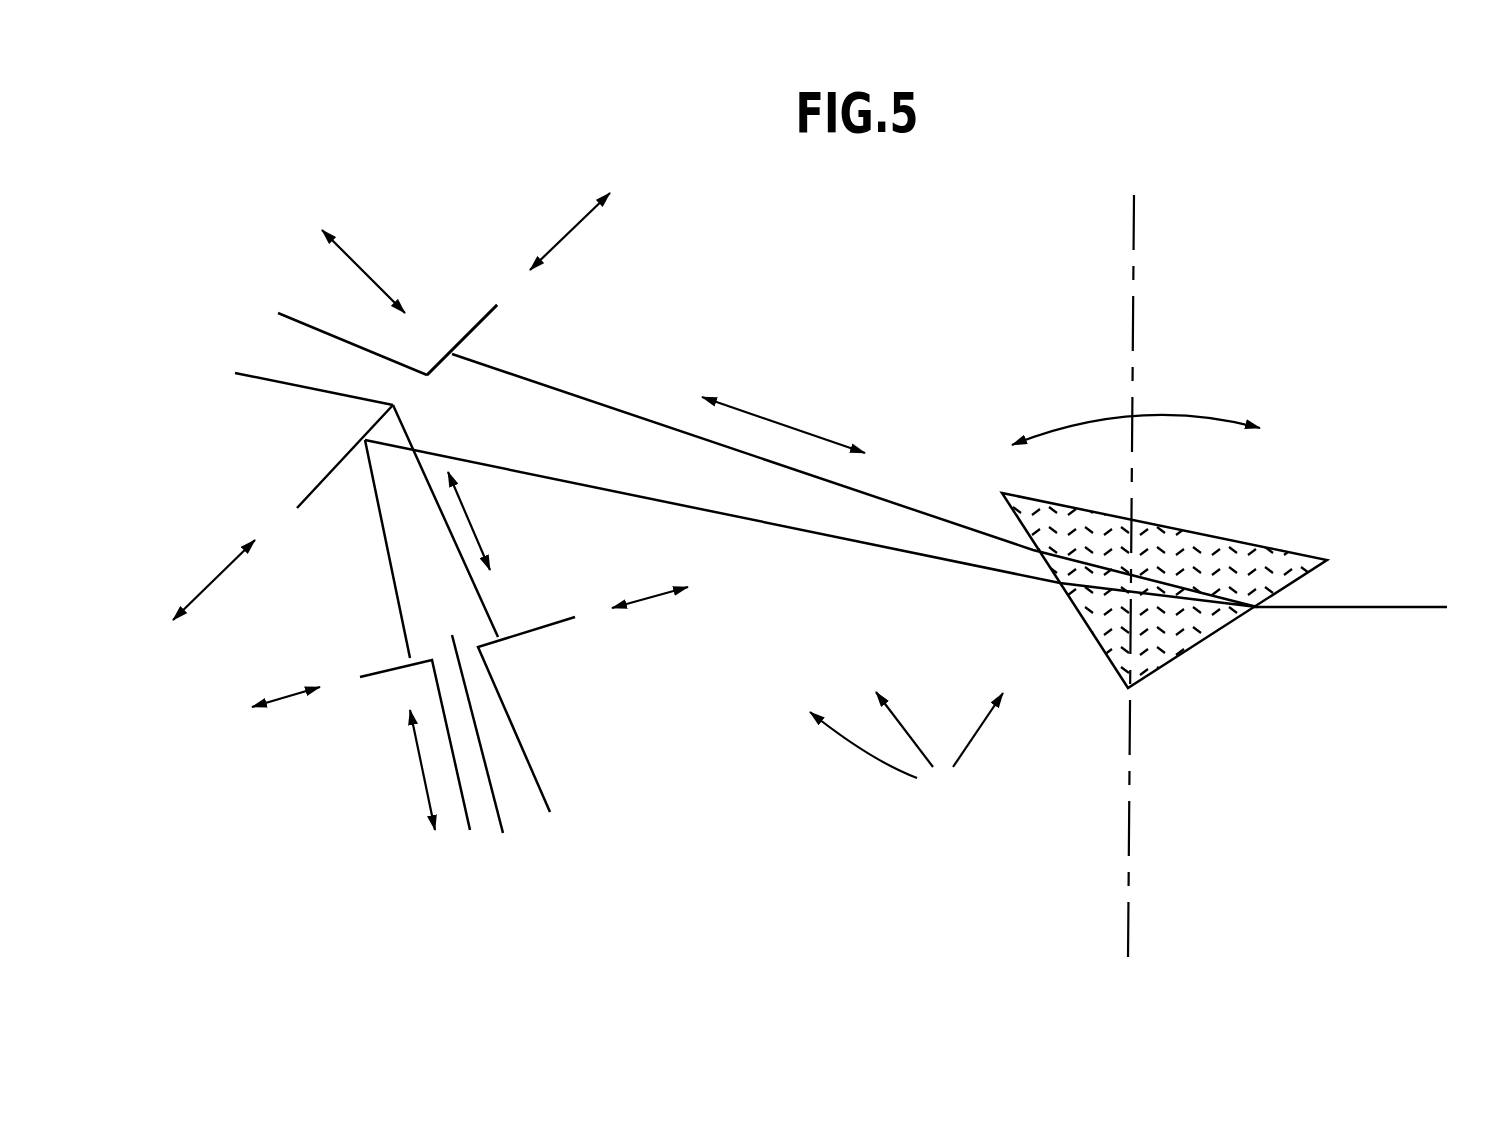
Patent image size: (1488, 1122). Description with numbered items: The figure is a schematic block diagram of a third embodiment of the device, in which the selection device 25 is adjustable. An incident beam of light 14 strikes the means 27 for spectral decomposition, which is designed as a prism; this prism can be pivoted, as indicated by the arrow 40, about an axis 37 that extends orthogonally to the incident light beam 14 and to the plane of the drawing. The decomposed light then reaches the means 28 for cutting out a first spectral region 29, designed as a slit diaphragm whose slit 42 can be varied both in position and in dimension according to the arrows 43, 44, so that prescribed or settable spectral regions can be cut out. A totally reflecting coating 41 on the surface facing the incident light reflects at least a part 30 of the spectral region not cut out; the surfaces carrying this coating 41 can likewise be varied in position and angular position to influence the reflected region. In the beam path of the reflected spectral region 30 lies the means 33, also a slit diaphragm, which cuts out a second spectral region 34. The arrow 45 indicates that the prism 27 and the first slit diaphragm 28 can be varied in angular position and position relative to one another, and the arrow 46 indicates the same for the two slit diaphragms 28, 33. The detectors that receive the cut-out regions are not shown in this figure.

The beam of light 14 is at (1412, 605).
The selection device 25 is at (906, 750).
The means for spectral decomposition 27 is at (1247, 540).
The means for cutting out a first spectral region 28 is at (467, 327).
The first spectral region 29 is at (290, 355).
The reflected spectral region 30 is at (410, 543).
The means for cutting out a second spectral region 33 is at (390, 673).
The second spectral region 34 is at (505, 733).
The axis 37 is at (1140, 628).
The arrow 40 is at (1185, 410).
The totally reflecting coating 41 is at (490, 317).
The slit 42 is at (410, 390).
The arrow 43 is at (363, 267).
The arrow 44 is at (567, 228).
The arrow 45 is at (792, 427).
The arrow 46 is at (473, 527).